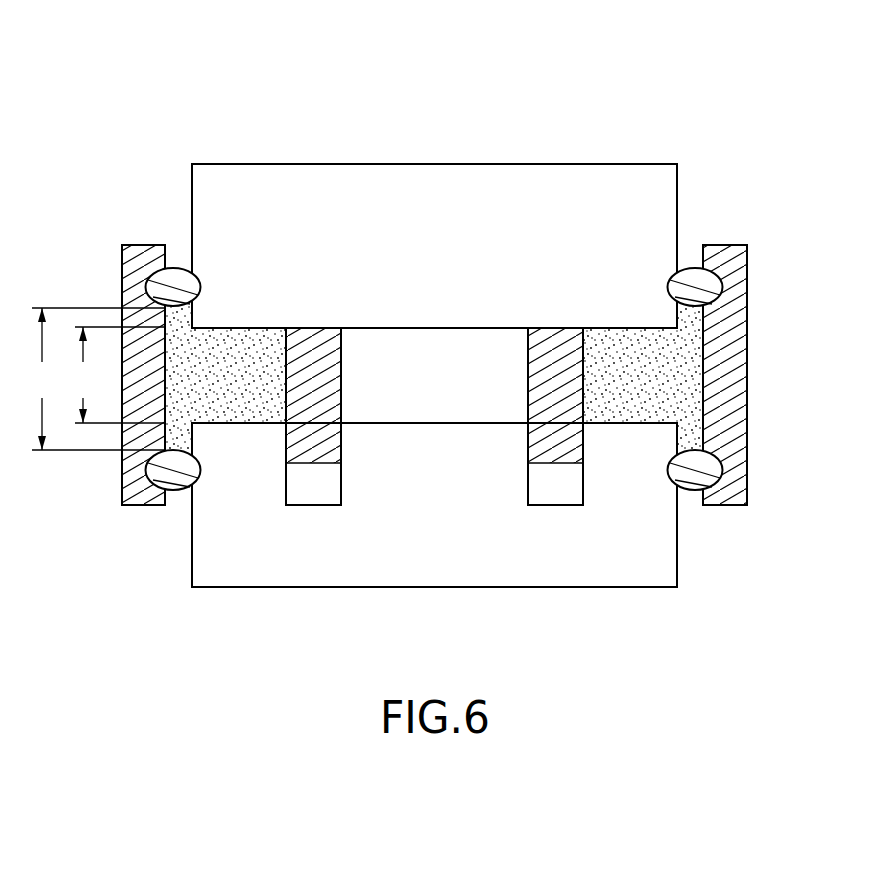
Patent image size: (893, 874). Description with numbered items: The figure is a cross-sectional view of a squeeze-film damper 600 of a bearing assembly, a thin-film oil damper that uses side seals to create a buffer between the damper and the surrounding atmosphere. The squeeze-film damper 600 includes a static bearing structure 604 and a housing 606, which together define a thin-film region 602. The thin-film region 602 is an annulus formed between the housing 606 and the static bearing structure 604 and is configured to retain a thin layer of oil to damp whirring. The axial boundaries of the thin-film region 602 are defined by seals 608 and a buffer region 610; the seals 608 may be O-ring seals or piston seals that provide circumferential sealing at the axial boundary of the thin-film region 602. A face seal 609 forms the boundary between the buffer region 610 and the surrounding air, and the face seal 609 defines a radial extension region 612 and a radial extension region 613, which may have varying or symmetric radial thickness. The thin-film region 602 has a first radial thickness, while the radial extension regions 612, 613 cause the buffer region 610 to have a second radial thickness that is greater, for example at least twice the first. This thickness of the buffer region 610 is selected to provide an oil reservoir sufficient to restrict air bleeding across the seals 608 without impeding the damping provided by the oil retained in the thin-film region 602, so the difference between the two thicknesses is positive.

The squeeze-film damper 600 is at (165, 103).
The thin-film region 602 is at (483, 362).
The static bearing structure 604 is at (461, 566).
The housing 606 is at (360, 164).
The seals 608 is at (553, 437).
The face seal 609 is at (737, 375).
The buffer region 610 is at (650, 377).
The radial extension region 612 is at (690, 322).
The radial extension region 613 is at (692, 433).